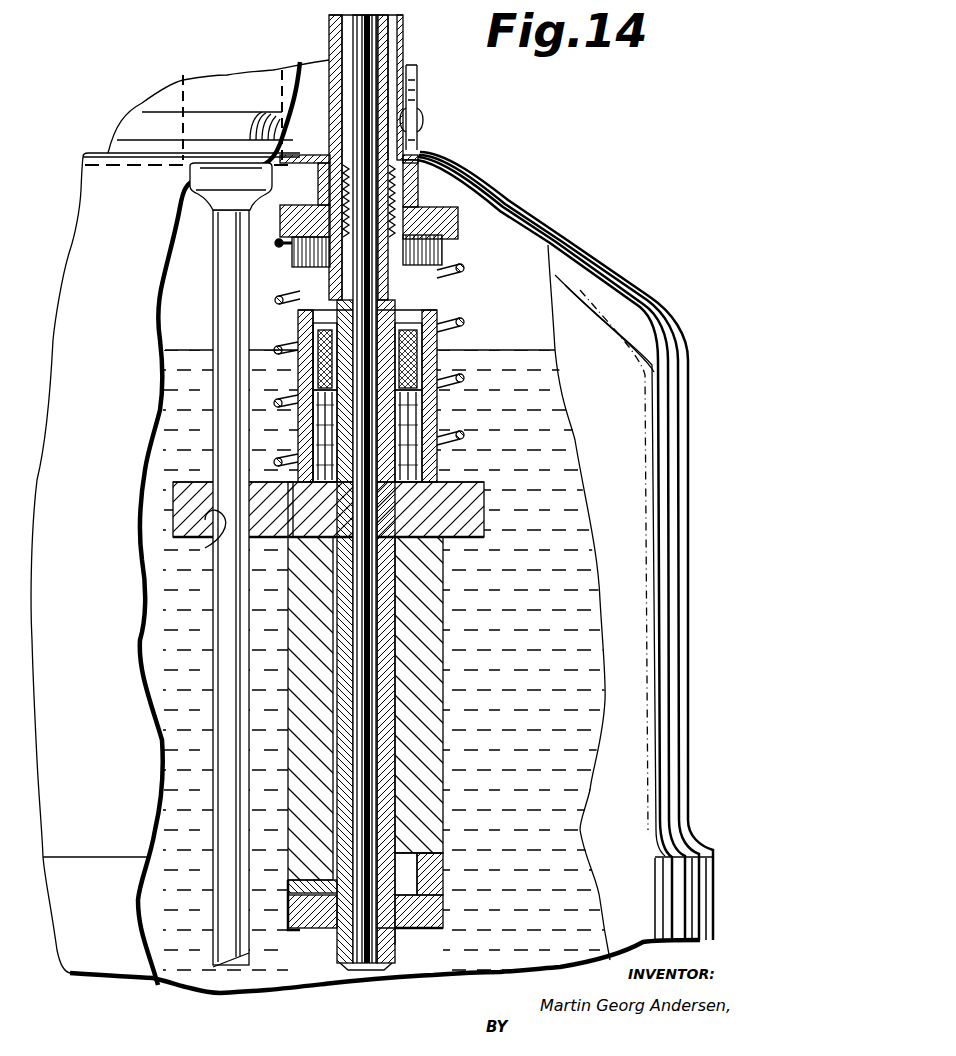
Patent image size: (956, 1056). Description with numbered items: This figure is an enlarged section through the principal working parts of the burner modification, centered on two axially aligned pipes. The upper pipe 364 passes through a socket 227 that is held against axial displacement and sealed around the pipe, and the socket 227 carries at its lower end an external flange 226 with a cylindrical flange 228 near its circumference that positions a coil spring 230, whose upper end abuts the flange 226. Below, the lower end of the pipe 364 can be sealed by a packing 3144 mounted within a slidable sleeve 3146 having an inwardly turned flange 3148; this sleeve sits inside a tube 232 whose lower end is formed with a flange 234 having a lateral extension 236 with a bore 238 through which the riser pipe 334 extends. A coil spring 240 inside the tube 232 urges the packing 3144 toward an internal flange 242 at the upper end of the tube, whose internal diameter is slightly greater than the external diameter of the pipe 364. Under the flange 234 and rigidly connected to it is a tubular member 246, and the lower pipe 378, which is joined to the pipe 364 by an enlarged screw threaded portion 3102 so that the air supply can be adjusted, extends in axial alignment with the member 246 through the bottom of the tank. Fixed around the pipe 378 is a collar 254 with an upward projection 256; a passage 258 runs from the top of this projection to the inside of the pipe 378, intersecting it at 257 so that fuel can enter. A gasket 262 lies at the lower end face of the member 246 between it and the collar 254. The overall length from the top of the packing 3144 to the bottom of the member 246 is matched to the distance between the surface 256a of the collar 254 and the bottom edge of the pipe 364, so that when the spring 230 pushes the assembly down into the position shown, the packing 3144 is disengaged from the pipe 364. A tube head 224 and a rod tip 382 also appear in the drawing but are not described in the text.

The tube head 224 is at (192, 186).
The external flange 226 is at (455, 217).
The socket 227 is at (418, 196).
The cylindrical flange 228 is at (455, 247).
The coil spring 230 is at (560, 272).
The tube 232 is at (300, 445).
The flange 234 is at (482, 492).
The lateral extension 236 is at (186, 500).
The bore 238 is at (205, 548).
The coil spring 240 is at (425, 438).
The internal flange 242 is at (310, 306).
The tubular member 246 is at (446, 596).
The collar 254 is at (292, 902).
The upward projection 256 is at (433, 867).
The surface 256a is at (291, 930).
The intersection 257 is at (393, 940).
The passage 258 is at (420, 882).
The gasket 262 is at (292, 884).
The riser pipe 334 is at (221, 752).
The pipe 364 is at (414, 106).
The pipe 378 is at (386, 85).
The rod tip 382 is at (366, 968).
The enlarged screw threaded portion 3102 is at (420, 160).
The packing 3144 is at (425, 372).
The slidable sleeve 3146 is at (438, 347).
The inwardly turned flange 3148 is at (420, 395).